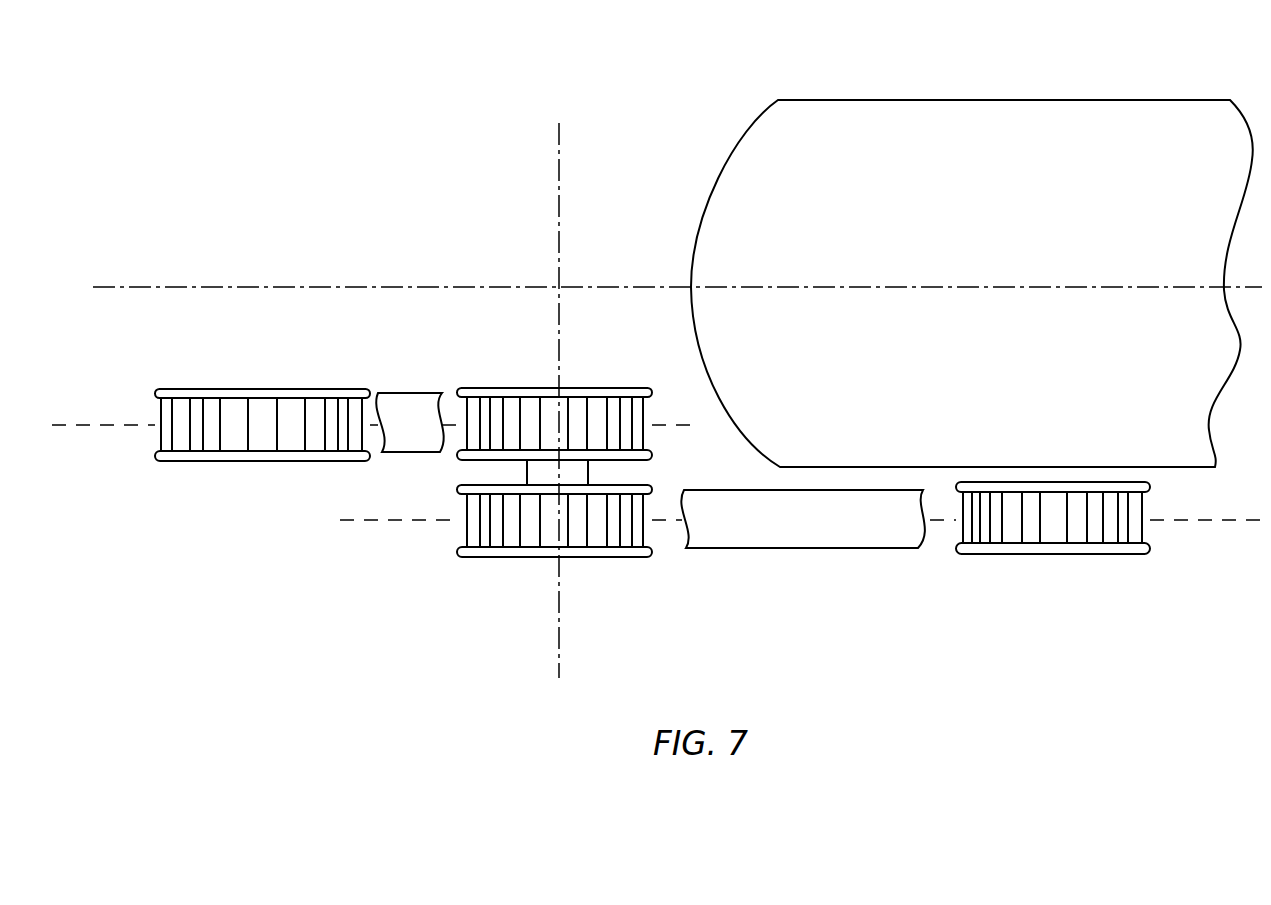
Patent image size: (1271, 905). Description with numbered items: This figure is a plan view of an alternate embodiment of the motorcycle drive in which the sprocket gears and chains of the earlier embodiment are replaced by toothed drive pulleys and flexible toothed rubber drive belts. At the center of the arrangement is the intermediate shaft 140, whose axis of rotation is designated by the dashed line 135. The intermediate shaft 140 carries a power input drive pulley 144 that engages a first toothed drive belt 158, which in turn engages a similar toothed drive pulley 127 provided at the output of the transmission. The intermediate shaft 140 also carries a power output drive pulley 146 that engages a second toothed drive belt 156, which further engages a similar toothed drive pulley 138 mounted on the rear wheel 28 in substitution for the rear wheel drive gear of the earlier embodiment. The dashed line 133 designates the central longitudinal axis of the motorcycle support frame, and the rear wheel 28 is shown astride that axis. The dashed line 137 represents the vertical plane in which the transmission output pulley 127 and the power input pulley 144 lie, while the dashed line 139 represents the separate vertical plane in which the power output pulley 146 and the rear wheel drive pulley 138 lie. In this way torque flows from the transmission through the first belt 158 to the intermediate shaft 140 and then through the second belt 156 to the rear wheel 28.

The rear wheel 28 is at (951, 112).
The toothed drive pulley 127 is at (213, 390).
The central longitudinal axis 133 is at (383, 287).
The axis of rotation of intermediate shaft 135 is at (559, 237).
The vertical plane 137 is at (82, 426).
The toothed drive pulley 138 is at (1043, 555).
The vertical plane 139 is at (388, 521).
The intermediate shaft 140 is at (588, 471).
The power input drive pulley 144 is at (589, 388).
The power output drive pulley 146 is at (588, 557).
The second toothed drive belt 156 is at (773, 548).
The first toothed drive belt 158 is at (412, 393).